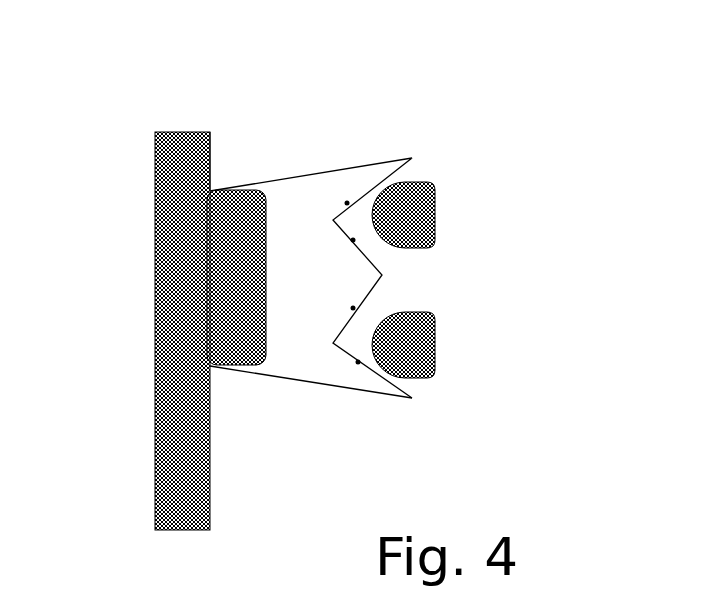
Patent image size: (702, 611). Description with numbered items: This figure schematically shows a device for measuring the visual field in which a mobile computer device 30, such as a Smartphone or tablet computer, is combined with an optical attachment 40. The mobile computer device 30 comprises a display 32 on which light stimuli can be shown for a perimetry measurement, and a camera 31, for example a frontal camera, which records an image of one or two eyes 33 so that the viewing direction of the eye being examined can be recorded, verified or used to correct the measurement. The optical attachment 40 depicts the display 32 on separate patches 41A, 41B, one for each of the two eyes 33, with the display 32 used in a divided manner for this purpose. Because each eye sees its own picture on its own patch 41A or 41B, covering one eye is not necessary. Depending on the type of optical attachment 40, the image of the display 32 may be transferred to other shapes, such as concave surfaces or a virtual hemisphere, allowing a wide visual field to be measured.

The mobile computer device 30 is at (141, 208).
The camera 31 is at (225, 156).
The display 32 is at (267, 184).
The eyes 33 is at (447, 230).
The optical attachment 40 is at (296, 412).
The patch 41A is at (353, 240).
The patch 41B is at (358, 362).